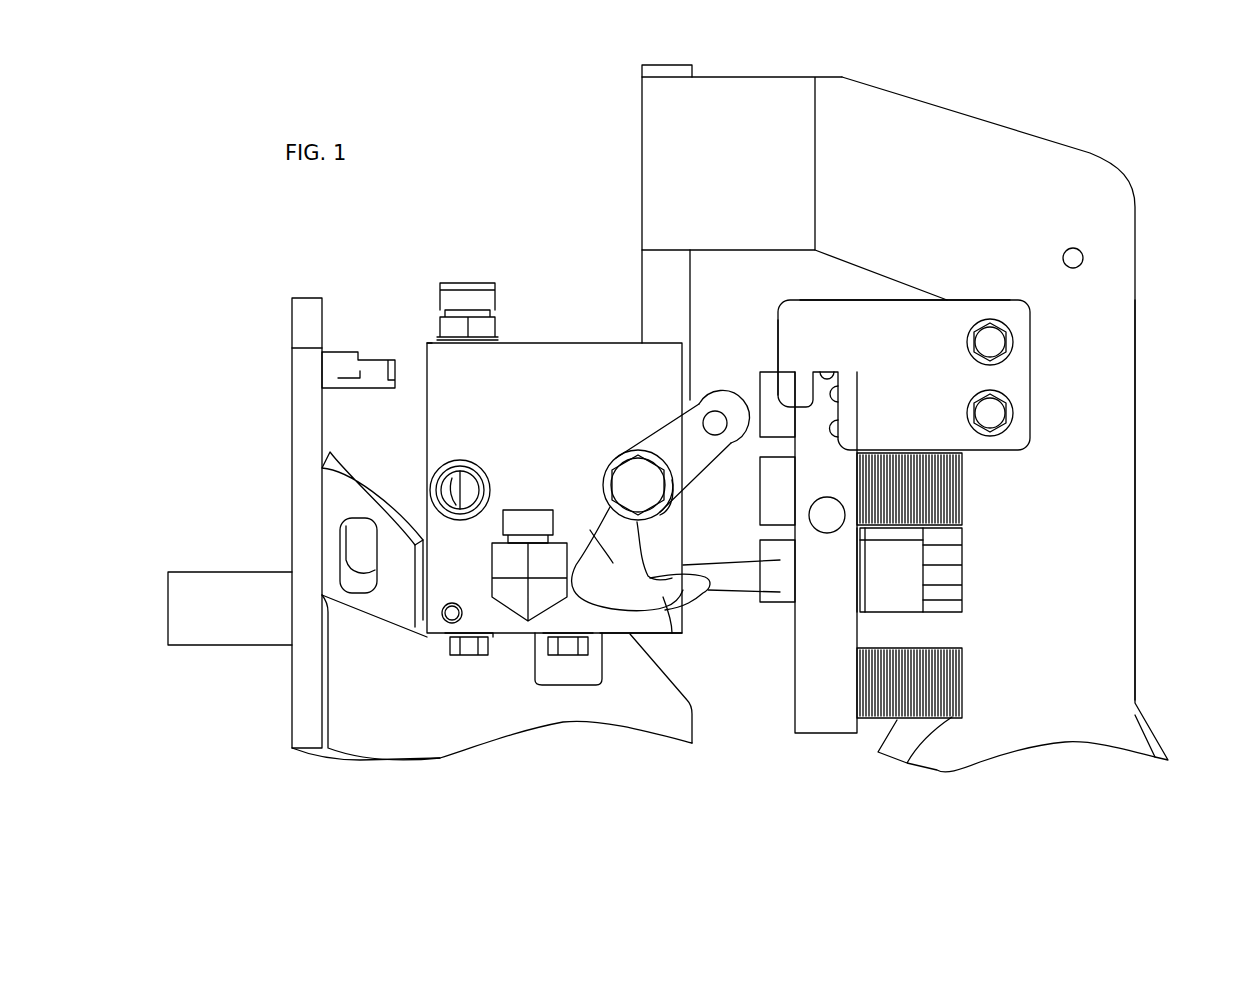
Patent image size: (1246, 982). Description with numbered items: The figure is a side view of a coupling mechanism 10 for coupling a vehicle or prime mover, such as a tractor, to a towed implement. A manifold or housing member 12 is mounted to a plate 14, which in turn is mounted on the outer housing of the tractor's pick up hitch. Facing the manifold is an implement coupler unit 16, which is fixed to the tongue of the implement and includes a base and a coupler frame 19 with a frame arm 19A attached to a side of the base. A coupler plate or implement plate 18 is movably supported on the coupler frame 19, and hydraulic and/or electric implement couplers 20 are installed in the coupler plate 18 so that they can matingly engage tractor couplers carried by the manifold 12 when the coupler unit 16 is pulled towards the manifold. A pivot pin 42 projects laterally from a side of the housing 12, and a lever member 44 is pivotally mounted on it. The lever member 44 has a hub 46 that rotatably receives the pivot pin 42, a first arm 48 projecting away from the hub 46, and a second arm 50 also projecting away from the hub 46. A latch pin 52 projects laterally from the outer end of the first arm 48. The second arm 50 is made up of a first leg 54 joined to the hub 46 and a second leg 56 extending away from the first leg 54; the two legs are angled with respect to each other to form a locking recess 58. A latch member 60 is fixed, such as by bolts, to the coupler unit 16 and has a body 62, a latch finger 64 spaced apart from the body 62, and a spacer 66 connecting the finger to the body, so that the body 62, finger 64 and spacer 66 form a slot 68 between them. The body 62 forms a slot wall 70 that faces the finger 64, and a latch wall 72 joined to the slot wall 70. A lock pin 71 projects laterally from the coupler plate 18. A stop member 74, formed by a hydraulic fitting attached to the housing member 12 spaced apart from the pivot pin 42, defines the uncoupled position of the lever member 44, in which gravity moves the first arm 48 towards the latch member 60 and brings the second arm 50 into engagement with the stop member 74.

The coupling mechanism 10 is at (498, 68).
The manifold or housing member 12 is at (663, 322).
The plate 14 is at (306, 472).
The implement coupler unit 16 is at (1145, 180).
The coupler plate or implement plate 18 is at (817, 748).
The coupler frame 19 is at (758, 70).
The frame arm 19A is at (1080, 546).
The implement coupler 20 is at (905, 590).
The pivot pin 42 is at (638, 478).
The lever member 44 is at (580, 540).
The hub 46 is at (672, 510).
The first arm 48 is at (706, 385).
The second arm 50 is at (615, 625).
The latch pin 52 is at (716, 418).
The first leg 54 is at (613, 563).
The second leg 56 is at (665, 598).
The locking recess 58 is at (672, 582).
The latch member 60 is at (1048, 364).
The body 62 is at (955, 312).
The latch finger 64 is at (797, 382).
The spacer 66 is at (845, 316).
The slot 68 is at (828, 378).
The slot wall 70 is at (840, 400).
The lock pin 71 is at (832, 522).
The latch wall 72 is at (840, 433).
The stop member 74 is at (520, 597).